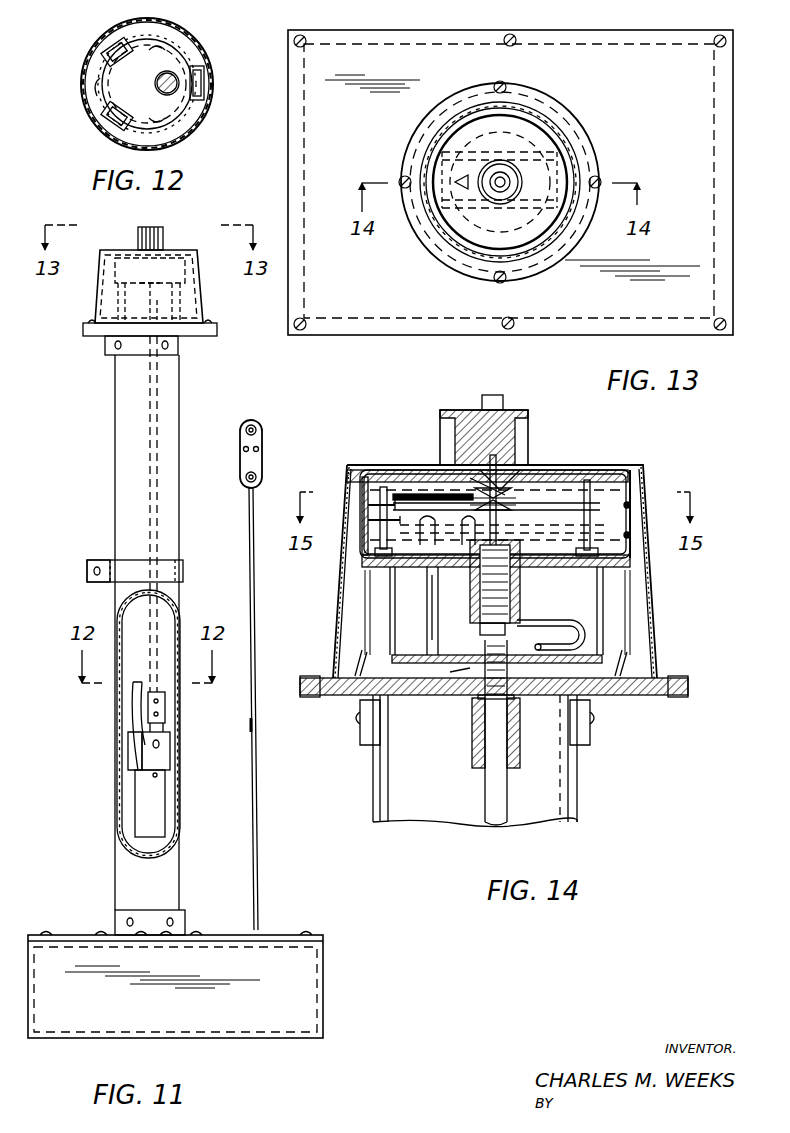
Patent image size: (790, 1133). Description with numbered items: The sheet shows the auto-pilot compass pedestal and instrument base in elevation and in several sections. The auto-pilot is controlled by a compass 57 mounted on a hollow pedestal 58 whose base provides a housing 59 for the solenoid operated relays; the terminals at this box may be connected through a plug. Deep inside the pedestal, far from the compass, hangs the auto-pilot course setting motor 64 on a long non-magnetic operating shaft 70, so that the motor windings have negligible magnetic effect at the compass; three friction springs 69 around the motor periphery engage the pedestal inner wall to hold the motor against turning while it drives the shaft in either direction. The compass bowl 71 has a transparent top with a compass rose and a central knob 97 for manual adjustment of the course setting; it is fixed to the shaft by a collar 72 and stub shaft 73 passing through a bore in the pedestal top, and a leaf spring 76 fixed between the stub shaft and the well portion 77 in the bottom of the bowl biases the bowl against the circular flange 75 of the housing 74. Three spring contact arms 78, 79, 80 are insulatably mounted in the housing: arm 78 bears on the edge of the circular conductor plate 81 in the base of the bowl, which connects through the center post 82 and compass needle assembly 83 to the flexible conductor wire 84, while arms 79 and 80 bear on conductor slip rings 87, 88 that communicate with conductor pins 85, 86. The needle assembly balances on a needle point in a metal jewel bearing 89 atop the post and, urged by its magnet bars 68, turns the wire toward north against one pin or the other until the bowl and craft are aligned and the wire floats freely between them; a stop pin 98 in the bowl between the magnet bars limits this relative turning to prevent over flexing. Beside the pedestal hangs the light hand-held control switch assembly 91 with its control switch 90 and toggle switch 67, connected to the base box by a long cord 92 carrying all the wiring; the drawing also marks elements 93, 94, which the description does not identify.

In FIG. 11, the compass 57 is at (95, 296).
In FIG. 14, the compass 57 is at (648, 462).
In FIG. 12, the hollow pedestal 58 is at (82, 84).
In FIG. 11, the hollow pedestal 58 is at (115, 430).
In FIG. 13, the hollow pedestal 58 is at (445, 238).
In FIG. 14, the hollow pedestal 58 is at (578, 766).
In FIG. 11, the housing 59 is at (80, 932).
In FIG. 13, the housing 59 is at (402, 331).
In FIG. 12, the auto-pilot course setting motor 64 is at (178, 112).
In FIG. 11, the auto-pilot course setting motor 64 is at (140, 800).
In FIG. 11, the toggle switch 67 is at (246, 476).
In FIG. 13, the magnet bars 68 is at (566, 133).
In FIG. 14, the magnet bars 68 is at (501, 518).
In FIG. 12, the friction springs 69 is at (104, 46).
In FIG. 11, the friction springs 69 is at (135, 697).
In FIG. 12, the operating shaft 70 is at (157, 82).
In FIG. 11, the operating shaft 70 is at (160, 614).
In FIG. 14, the operating shaft 70 is at (490, 778).
In FIG. 14, the compass bowl 71 is at (632, 544).
In FIG. 11, the collar 72 is at (160, 368).
In FIG. 14, the collar 72 is at (472, 740).
In FIG. 14, the stub shaft 73 is at (487, 712).
In FIG. 11, the housing 74 is at (200, 305).
In FIG. 13, the housing 74 is at (575, 168).
In FIG. 14, the housing 74 is at (650, 482).
In FIG. 14, the circular flange 75 is at (626, 470).
In FIG. 14, the leaf spring 76 is at (558, 620).
In FIG. 14, the well portion 77 is at (521, 584).
In FIG. 14, the spring contact arm 78 is at (610, 625).
In FIG. 14, the spring contact arm 79 is at (433, 625).
In FIG. 14, the spring contact arm 80 is at (390, 602).
In FIG. 14, the circular conductor plate 81 is at (365, 560).
In FIG. 14, the center post 82 is at (498, 512).
In FIG. 11, the compass needle assembly 83 is at (166, 270).
In FIG. 13, the compass needle assembly 83 is at (522, 134).
In FIG. 14, the compass needle assembly 83 is at (432, 495).
In FIG. 14, the flexible conductor wire 84 is at (386, 488).
In FIG. 13, the conductor pin 85 is at (432, 202).
In FIG. 14, the conductor pin 85 is at (420, 530).
In FIG. 13, the conductor pin 86 is at (430, 165).
In FIG. 14, the conductor pin 86 is at (378, 492).
In FIG. 14, the conductor slip ring 87 is at (362, 522).
In FIG. 14, the conductor slip ring 88 is at (630, 505).
In FIG. 14, the metal jewel bearing 89 is at (500, 480).
In FIG. 11, the control switch 90 is at (244, 425).
In FIG. 11, the control switch assembly 91 is at (258, 420).
In FIG. 11, the cord 92 is at (255, 762).
In FIG. 11, the small hole 93 is at (243, 449).
In FIG. 11, the small hole 94 is at (259, 449).
In FIG. 14, the knob 97 is at (530, 428).
In FIG. 13, the stop pin 98 is at (568, 205).
In FIG. 14, the stop pin 98 is at (588, 480).